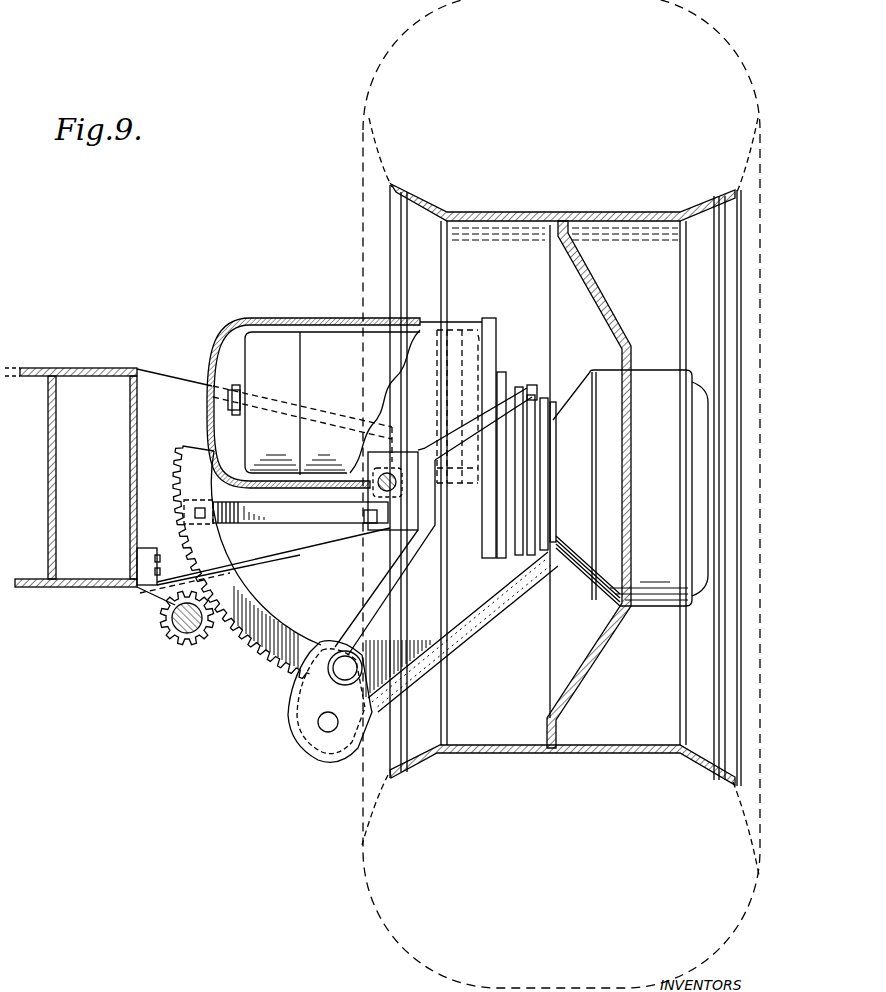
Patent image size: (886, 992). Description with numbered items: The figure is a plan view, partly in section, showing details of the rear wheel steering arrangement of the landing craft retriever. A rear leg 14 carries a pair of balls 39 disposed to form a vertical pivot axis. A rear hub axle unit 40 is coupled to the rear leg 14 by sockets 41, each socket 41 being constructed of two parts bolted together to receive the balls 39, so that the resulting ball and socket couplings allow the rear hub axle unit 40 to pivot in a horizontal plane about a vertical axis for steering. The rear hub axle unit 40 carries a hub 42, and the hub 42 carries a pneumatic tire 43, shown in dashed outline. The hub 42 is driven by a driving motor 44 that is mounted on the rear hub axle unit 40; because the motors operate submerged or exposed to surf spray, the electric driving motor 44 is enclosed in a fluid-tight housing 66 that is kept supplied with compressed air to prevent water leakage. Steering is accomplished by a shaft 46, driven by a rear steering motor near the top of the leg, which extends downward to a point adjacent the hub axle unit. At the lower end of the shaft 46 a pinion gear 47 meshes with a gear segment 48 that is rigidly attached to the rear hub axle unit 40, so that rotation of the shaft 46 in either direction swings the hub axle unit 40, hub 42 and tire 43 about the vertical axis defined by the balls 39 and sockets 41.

The rear leg 14 is at (62, 369).
The ball 39 is at (398, 492).
The rear hub axle unit 40 is at (456, 591).
The socket 41 is at (401, 450).
The hub 42 is at (563, 295).
The pneumatic tire 43 is at (388, 152).
The driving motor 44 is at (330, 342).
The shaft 46 is at (168, 622).
The pinion gear 47 is at (173, 640).
The gear segment 48 is at (245, 652).
The fluid-tight housing 66 is at (305, 318).